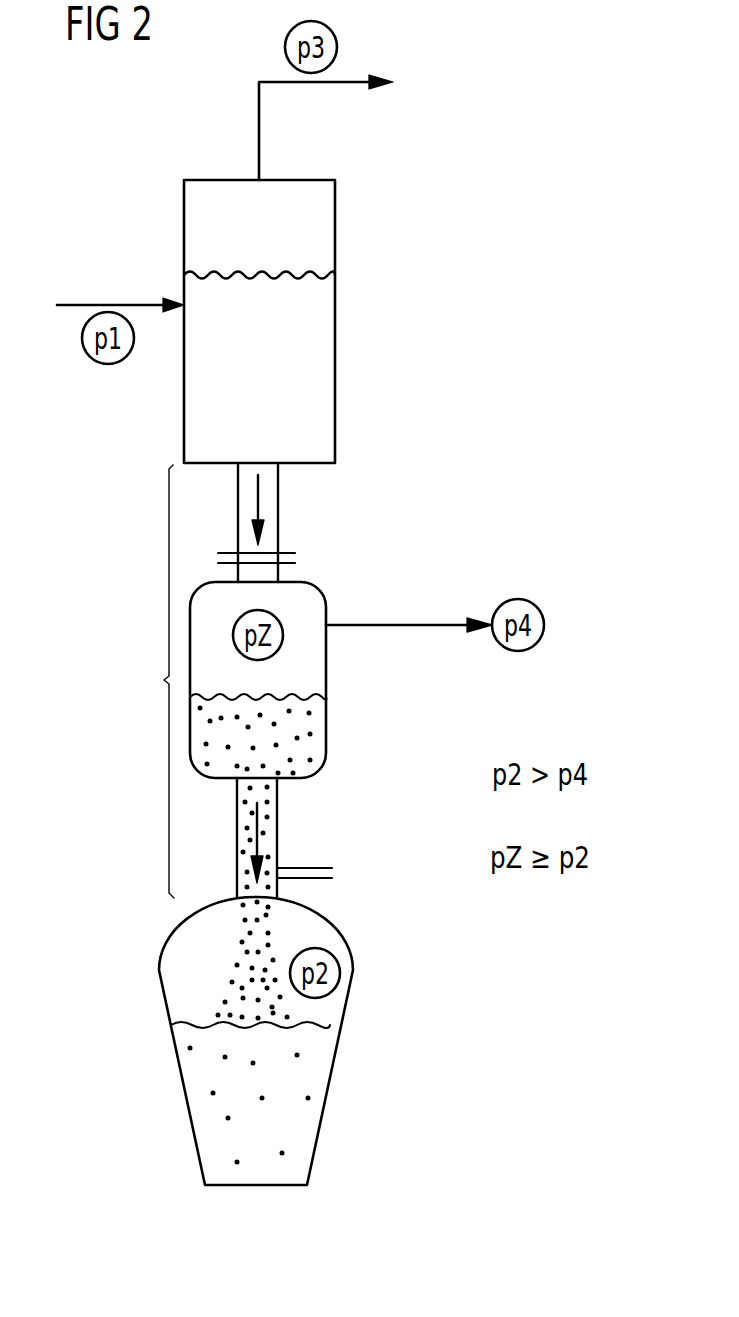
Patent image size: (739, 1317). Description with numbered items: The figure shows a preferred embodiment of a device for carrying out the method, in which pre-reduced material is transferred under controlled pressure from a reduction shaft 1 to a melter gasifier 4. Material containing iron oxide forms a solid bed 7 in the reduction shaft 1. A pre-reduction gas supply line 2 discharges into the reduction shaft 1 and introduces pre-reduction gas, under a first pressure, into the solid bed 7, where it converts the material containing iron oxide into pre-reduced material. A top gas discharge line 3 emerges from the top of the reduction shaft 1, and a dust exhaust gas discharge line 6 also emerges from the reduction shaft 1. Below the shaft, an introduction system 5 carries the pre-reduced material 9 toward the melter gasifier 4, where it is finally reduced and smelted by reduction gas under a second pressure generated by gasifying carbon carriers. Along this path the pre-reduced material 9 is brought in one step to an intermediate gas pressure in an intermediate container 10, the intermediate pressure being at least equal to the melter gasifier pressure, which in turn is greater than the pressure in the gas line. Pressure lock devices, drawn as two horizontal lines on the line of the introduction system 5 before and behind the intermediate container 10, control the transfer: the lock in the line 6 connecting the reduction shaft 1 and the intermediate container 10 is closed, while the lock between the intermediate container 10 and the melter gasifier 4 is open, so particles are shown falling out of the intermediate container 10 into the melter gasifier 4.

The reduction shaft 1 is at (184, 220).
The pre-reduction gas supply line 2 is at (105, 302).
The top gas discharge line 3 is at (258, 132).
The melter gasifier 4 is at (323, 1115).
The introduction system 5 is at (237, 681).
The dust exhaust gas discharge line 6 is at (280, 512).
The solid bed 7 is at (218, 402).
The pre-reduced material 9 is at (257, 502).
The intermediate container 10 is at (326, 680).